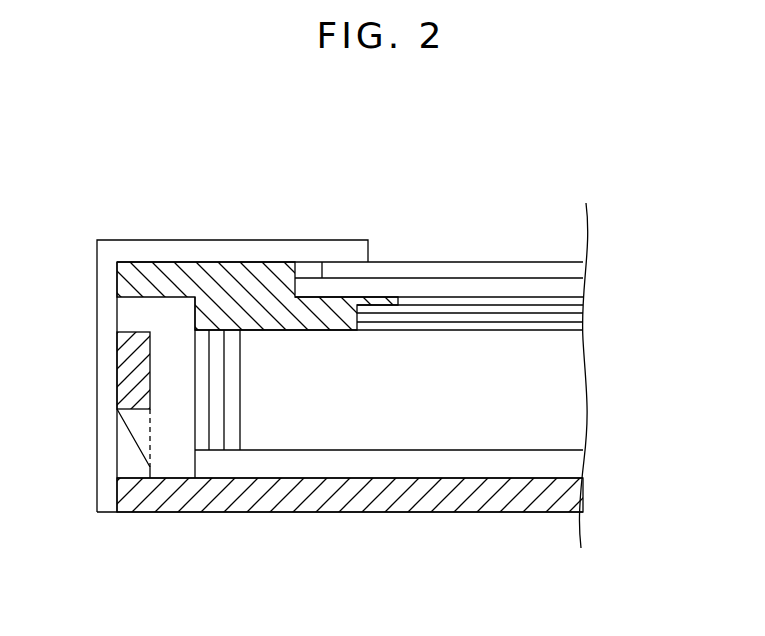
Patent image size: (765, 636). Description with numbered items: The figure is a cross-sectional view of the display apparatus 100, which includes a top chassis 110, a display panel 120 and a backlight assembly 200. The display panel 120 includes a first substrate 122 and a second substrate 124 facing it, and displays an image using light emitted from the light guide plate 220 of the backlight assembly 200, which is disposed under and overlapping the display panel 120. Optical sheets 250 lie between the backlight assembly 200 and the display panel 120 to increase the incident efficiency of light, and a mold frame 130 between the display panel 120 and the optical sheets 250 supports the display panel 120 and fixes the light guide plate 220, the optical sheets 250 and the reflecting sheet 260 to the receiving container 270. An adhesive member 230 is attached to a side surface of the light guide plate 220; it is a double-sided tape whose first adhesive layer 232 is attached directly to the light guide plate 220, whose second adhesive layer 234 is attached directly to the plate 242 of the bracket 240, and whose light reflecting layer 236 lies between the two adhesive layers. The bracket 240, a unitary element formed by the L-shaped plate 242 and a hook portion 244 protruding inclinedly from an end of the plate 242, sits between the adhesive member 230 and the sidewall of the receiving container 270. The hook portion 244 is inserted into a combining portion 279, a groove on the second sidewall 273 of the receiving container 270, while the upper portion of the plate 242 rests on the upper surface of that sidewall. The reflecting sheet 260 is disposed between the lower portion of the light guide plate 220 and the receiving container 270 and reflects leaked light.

The display apparatus 100 is at (302, 184).
The top chassis 110 is at (170, 253).
The display panel 120 is at (350, 226).
The first substrate 122 is at (417, 190).
The second substrate 124 is at (436, 263).
The mold frame 130 is at (237, 268).
The backlight assembly 200 is at (419, 457).
The light guide plate 220 is at (578, 393).
The adhesive member 230 is at (258, 473).
The first adhesive layer 232 is at (237, 452).
The second adhesive layer 234 is at (203, 452).
The light reflecting layer 236 is at (220, 452).
The bracket 240 is at (150, 457).
The plate 242 is at (175, 462).
The hook portion 244 is at (135, 432).
The optical sheets 250 is at (590, 305).
The reflecting sheet 260 is at (578, 463).
The receiving container 270 is at (392, 515).
The second sidewall 273 is at (118, 373).
The combining portion 279 is at (118, 456).